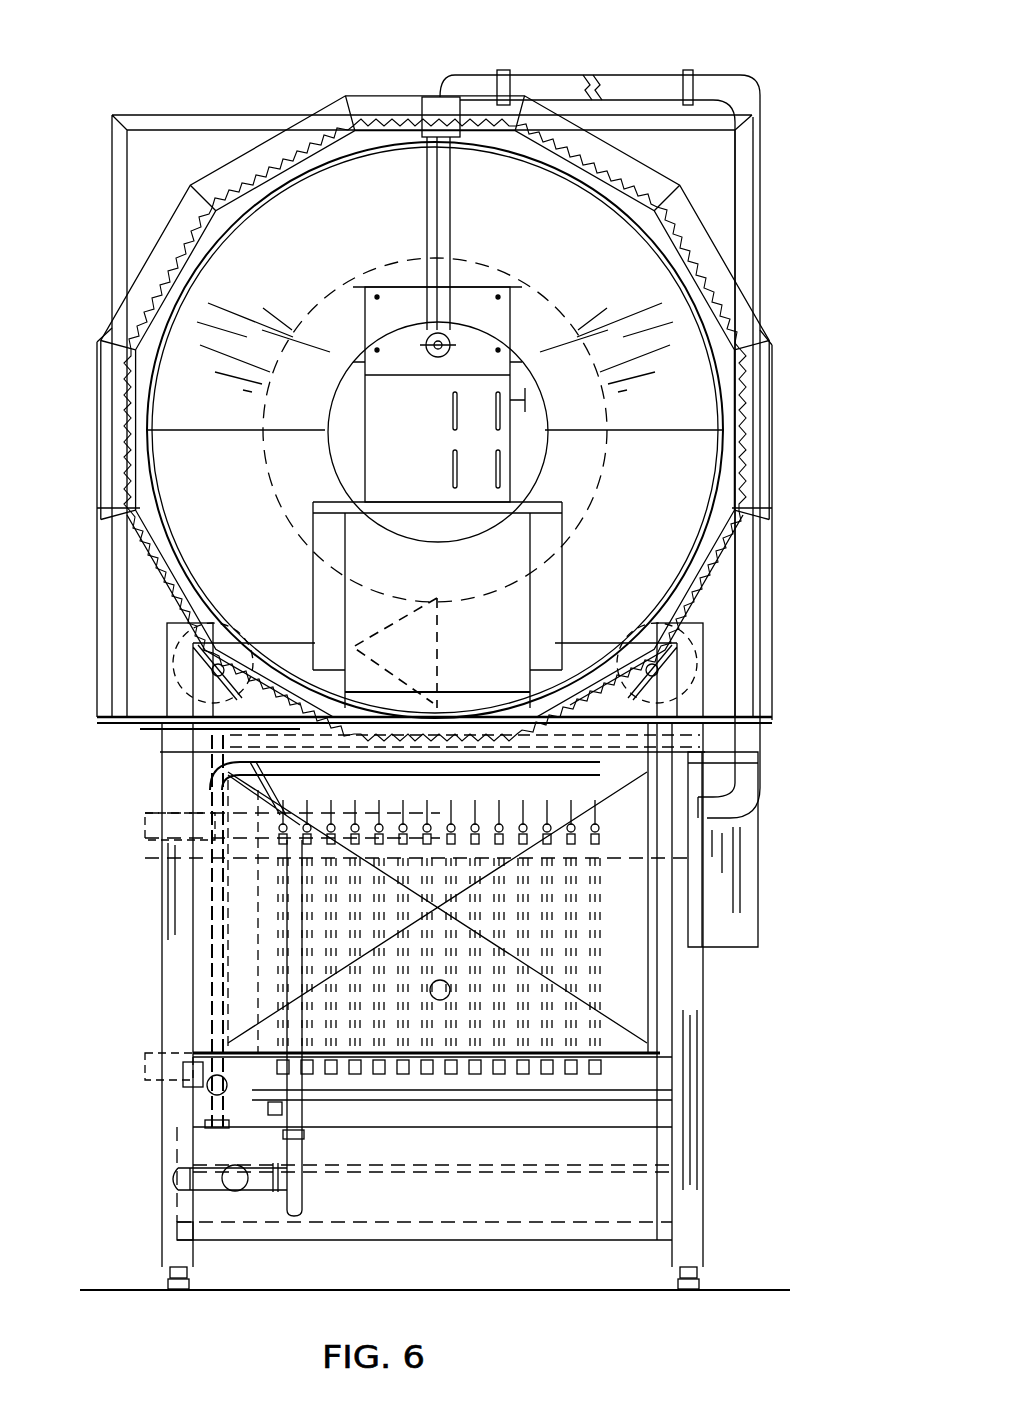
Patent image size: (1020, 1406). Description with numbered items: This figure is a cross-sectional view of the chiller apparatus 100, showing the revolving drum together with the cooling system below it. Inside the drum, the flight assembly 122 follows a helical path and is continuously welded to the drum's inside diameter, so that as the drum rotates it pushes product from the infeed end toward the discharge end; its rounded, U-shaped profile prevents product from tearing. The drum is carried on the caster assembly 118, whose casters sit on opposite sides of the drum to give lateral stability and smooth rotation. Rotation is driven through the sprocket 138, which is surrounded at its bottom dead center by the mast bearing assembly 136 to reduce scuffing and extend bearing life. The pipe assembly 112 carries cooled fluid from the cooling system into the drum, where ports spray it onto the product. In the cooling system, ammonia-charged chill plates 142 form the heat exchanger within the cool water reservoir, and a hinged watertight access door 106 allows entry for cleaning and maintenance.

The chiller apparatus 100 is at (289, 90).
The pipe assembly 112 is at (727, 90).
The flight assembly 122 is at (350, 637).
The caster assembly 118 is at (172, 688).
The sprocket 138 is at (735, 705).
The mast bearing assembly 136 is at (705, 743).
The chill plates 142 is at (592, 930).
The watertight access door 106 is at (636, 990).